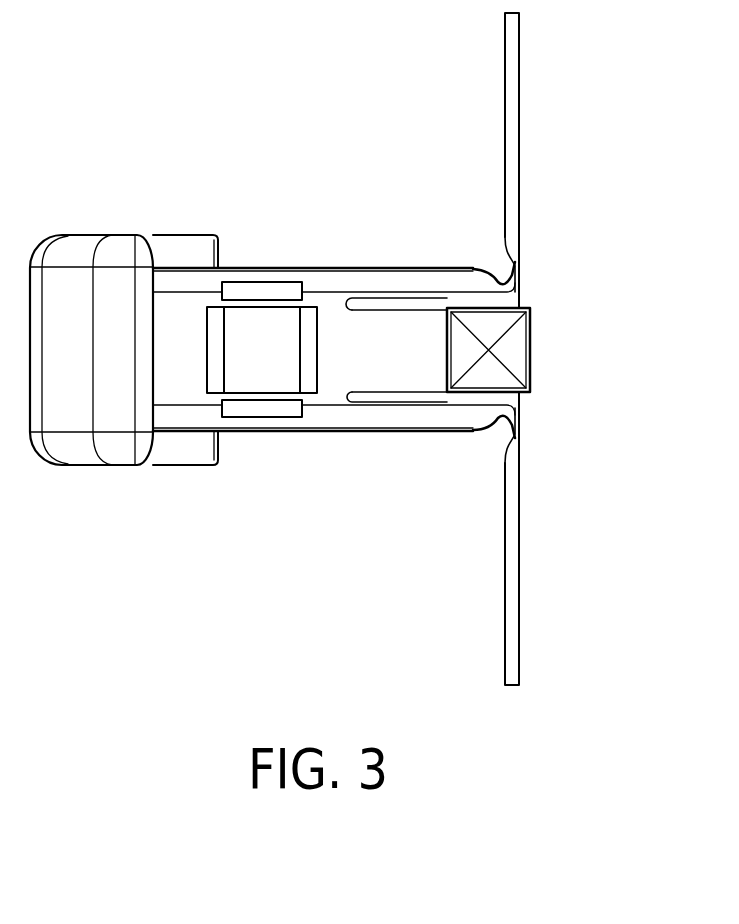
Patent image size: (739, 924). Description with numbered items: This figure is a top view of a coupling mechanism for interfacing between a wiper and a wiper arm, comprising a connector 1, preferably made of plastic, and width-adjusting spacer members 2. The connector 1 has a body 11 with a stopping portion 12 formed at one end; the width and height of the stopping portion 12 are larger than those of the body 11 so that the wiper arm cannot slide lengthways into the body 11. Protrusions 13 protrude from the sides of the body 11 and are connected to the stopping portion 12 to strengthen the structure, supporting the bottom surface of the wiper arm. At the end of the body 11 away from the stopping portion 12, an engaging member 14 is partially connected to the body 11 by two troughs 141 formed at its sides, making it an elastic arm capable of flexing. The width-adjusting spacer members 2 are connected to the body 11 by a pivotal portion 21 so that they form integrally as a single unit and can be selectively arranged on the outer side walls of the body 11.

The connector 1 is at (265, 196).
The body 11 is at (383, 288).
The stopping portion 12 is at (118, 283).
The protrusion 13 is at (185, 449).
The engaging member 14 is at (407, 358).
The trough 141 is at (377, 396).
The width-adjusting spacer member 2 is at (534, 132).
The pivotal portion 21 is at (521, 430).